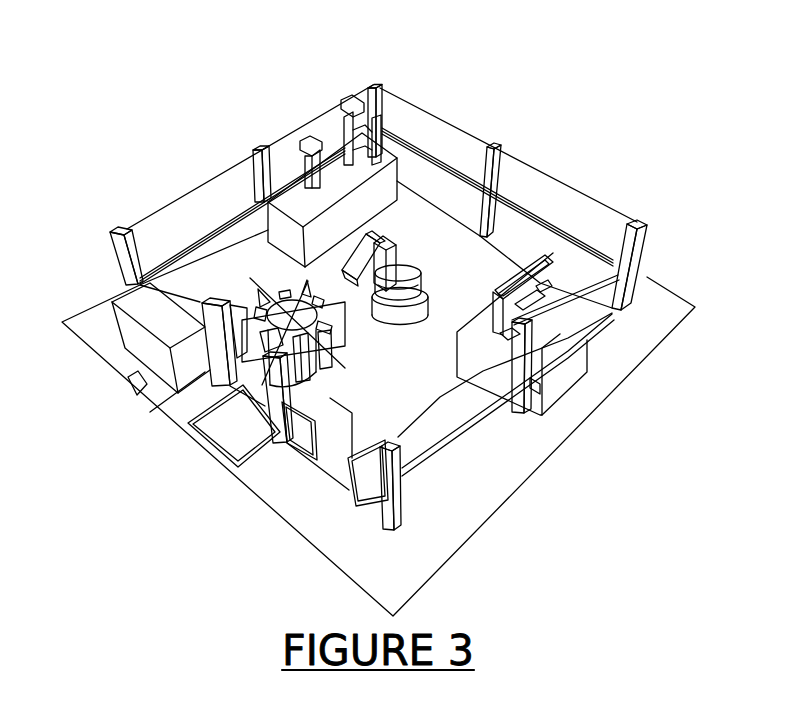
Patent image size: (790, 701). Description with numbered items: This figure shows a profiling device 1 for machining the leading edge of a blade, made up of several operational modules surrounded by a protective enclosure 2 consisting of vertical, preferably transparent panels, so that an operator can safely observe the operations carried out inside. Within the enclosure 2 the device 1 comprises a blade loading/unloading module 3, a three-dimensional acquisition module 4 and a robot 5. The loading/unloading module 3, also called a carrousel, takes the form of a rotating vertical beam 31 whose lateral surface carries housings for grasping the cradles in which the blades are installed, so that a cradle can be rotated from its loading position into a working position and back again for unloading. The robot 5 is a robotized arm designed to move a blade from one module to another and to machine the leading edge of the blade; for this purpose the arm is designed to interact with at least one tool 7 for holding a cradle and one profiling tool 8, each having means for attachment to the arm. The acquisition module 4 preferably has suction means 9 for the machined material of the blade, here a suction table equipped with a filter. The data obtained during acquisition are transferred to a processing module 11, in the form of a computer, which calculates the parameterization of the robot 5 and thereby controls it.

The profiling device 1 is at (501, 117).
The protective enclosure 2 is at (560, 215).
The blade loading/unloading module 3 is at (222, 303).
The rotating vertical beam 31 is at (287, 297).
The 3D acquisition module 4 is at (540, 294).
The robot 5 is at (395, 256).
The tool for holding a cradle 7 is at (308, 146).
The profiling tool 8 is at (362, 98).
The suction means 9 is at (483, 382).
The processing module 11 is at (158, 331).